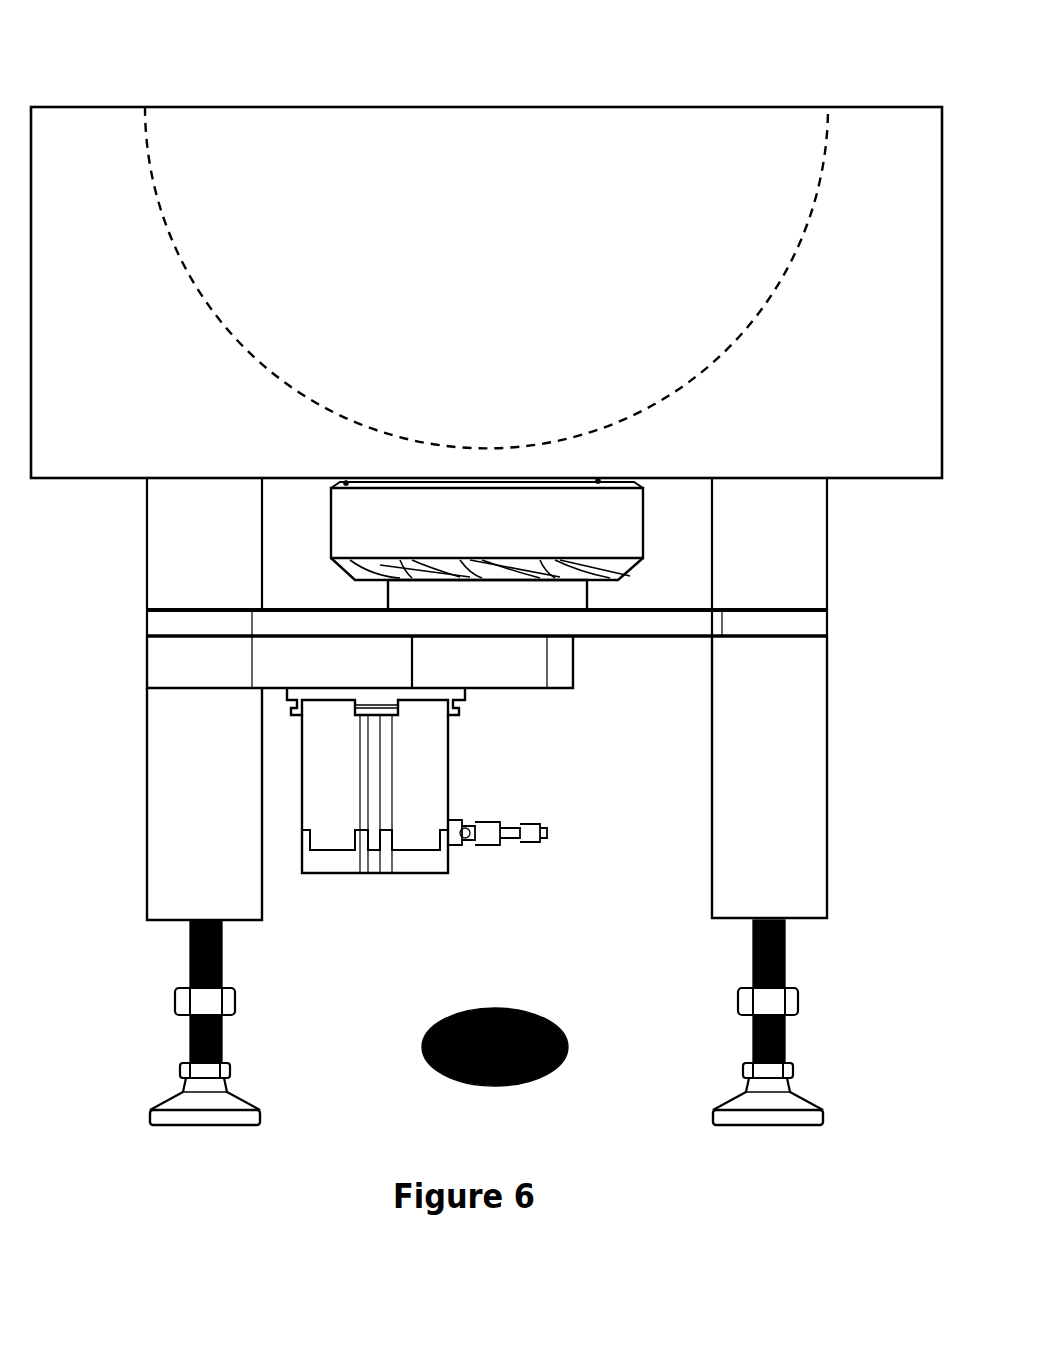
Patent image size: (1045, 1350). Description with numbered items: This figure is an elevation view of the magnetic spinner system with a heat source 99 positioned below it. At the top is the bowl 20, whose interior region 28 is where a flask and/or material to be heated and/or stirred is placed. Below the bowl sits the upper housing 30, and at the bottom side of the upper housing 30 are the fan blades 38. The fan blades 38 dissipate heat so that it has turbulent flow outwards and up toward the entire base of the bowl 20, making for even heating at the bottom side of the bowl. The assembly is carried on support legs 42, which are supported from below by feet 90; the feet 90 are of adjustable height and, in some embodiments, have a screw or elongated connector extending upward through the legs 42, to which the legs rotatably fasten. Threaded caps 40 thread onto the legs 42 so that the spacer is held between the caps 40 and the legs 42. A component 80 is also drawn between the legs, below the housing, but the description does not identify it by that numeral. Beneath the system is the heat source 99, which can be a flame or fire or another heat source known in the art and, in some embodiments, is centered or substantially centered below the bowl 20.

The bowl 20 is at (93, 162).
The interior region 28 is at (316, 175).
The upper housing 30 is at (610, 522).
The fan blades 38 is at (590, 563).
The threaded caps 40 is at (802, 551).
The support legs 42 is at (738, 815).
The motor 80 is at (418, 761).
The feet 90 is at (752, 1035).
The heat source 99 is at (442, 1018).